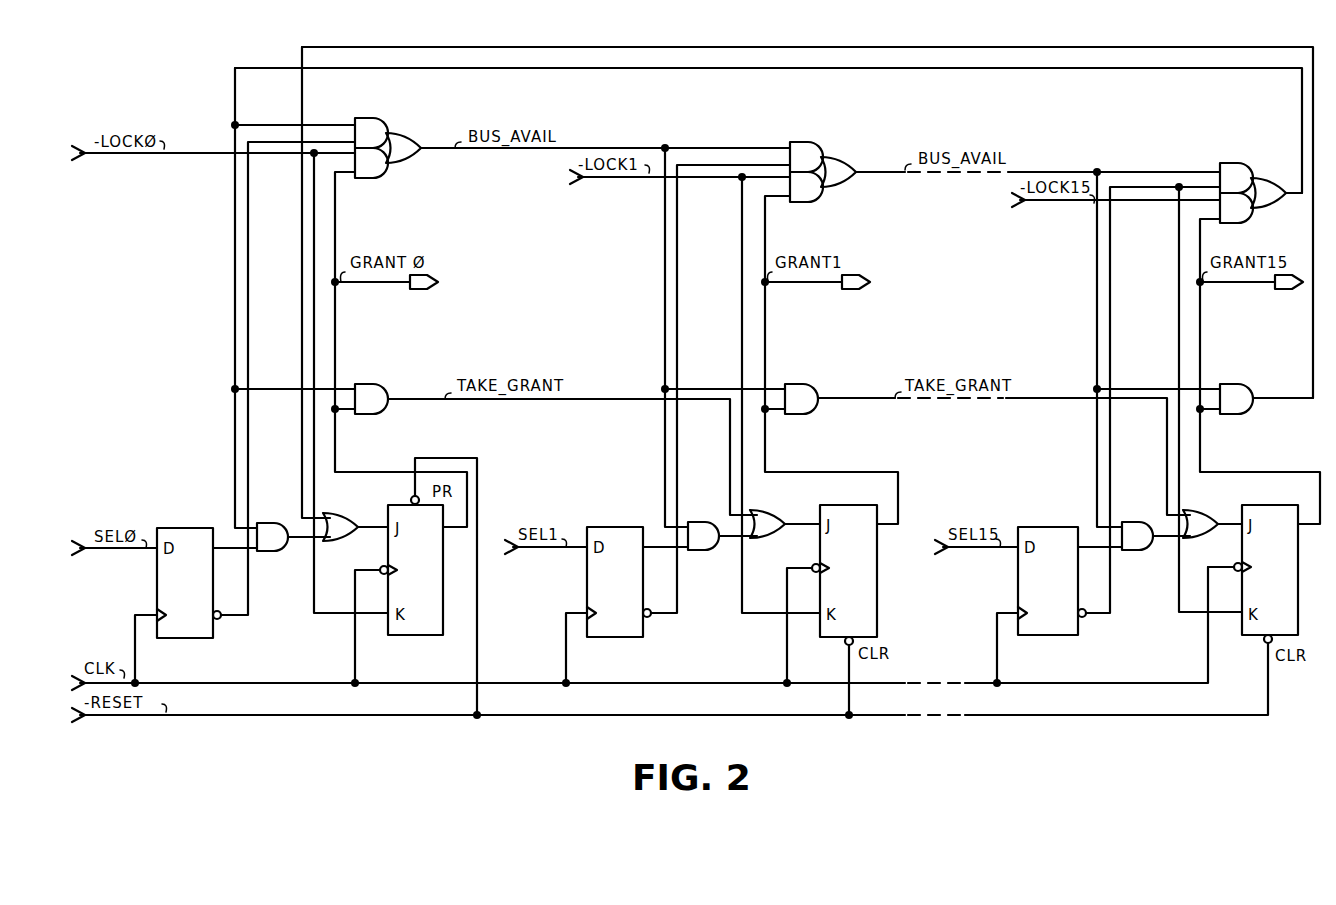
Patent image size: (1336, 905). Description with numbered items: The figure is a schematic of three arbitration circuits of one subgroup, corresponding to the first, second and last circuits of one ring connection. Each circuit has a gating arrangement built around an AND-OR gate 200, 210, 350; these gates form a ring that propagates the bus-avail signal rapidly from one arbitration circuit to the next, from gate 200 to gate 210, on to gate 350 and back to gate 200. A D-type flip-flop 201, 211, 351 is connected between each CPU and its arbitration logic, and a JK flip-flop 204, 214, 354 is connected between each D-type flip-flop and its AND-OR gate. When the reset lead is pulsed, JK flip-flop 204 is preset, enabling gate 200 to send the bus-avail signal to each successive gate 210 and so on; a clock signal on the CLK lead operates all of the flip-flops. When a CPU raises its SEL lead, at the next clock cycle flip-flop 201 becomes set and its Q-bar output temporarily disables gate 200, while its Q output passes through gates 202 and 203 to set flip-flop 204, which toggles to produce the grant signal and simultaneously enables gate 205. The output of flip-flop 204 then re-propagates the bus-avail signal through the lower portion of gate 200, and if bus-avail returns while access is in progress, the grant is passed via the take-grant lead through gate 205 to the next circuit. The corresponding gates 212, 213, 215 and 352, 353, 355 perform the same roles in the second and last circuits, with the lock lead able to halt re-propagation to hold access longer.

The AND-OR gate 200 is at (432, 119).
The D-type flip-flop 201 is at (165, 528).
The gate 202 is at (262, 552).
The gate 203 is at (331, 514).
The JK flip-flop 204 is at (413, 636).
The gate 205 is at (366, 383).
The AND-OR gate 210 is at (877, 149).
The D-type flip-flop 211 is at (595, 527).
The gate 212 is at (692, 551).
The gate 213 is at (760, 511).
The JK flip-flop 214 is at (877, 612).
The gate 215 is at (795, 383).
The AND-OR gate 350 is at (1297, 165).
The D-type flip-flop 351 is at (1027, 527).
The gate 352 is at (1127, 551).
The gate 353 is at (1190, 511).
The JK flip-flop 354 is at (1262, 505).
The gate 355 is at (1231, 383).